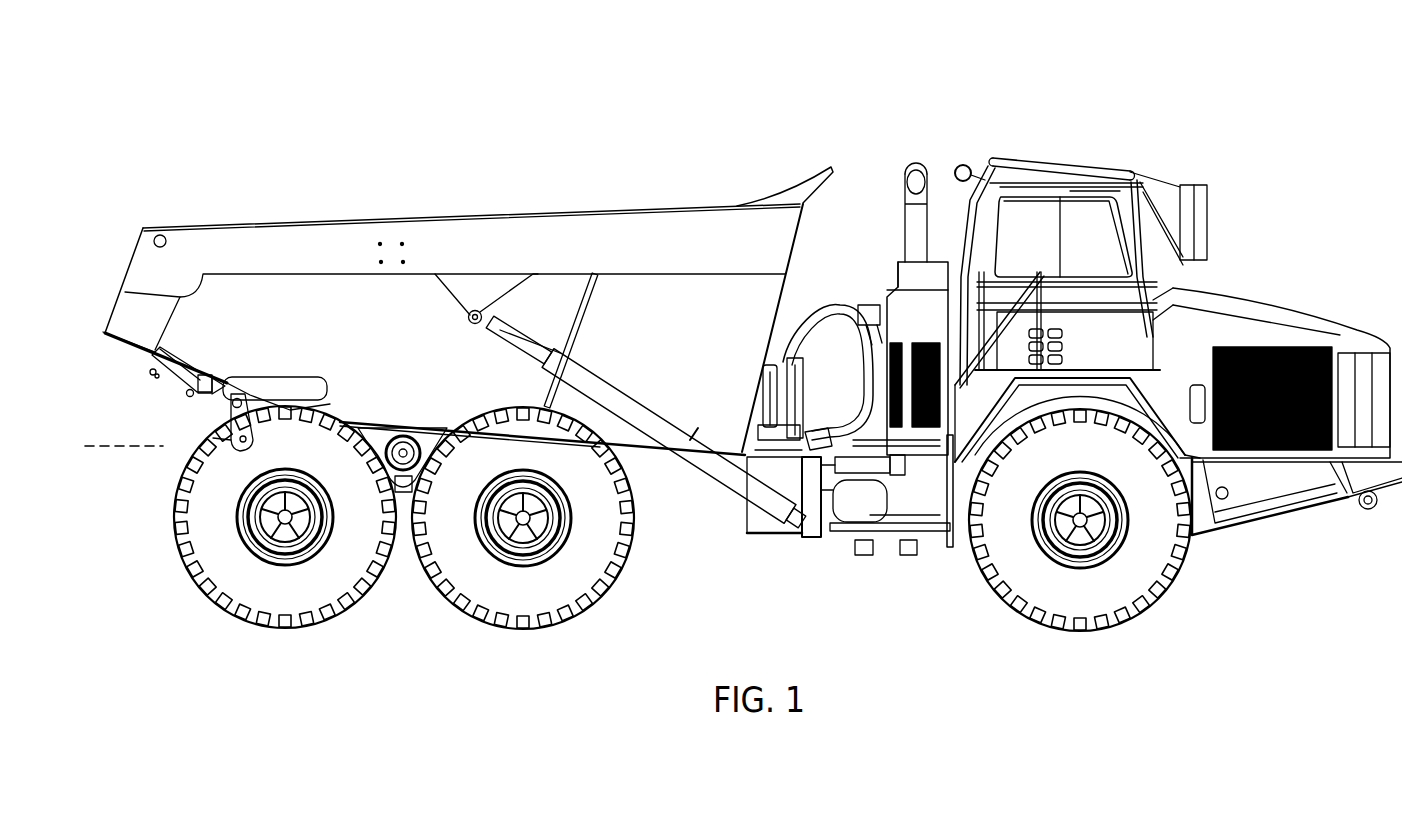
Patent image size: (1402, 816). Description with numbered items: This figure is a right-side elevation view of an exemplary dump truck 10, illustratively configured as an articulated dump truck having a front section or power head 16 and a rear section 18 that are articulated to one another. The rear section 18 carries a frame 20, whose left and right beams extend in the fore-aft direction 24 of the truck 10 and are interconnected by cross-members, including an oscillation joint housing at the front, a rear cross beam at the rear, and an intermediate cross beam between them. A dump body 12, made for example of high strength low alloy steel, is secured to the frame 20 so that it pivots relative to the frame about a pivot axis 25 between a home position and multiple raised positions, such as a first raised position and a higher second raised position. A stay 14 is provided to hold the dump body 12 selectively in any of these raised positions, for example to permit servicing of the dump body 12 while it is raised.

The dump truck 10 is at (390, 114).
The dump body 12 is at (586, 224).
The stay 14 is at (167, 385).
The front section 16 is at (1070, 172).
The rear section 18 is at (772, 120).
The frame 20 is at (213, 438).
The fore-aft direction 24 is at (111, 449).
The pivot axis 25 is at (256, 436).